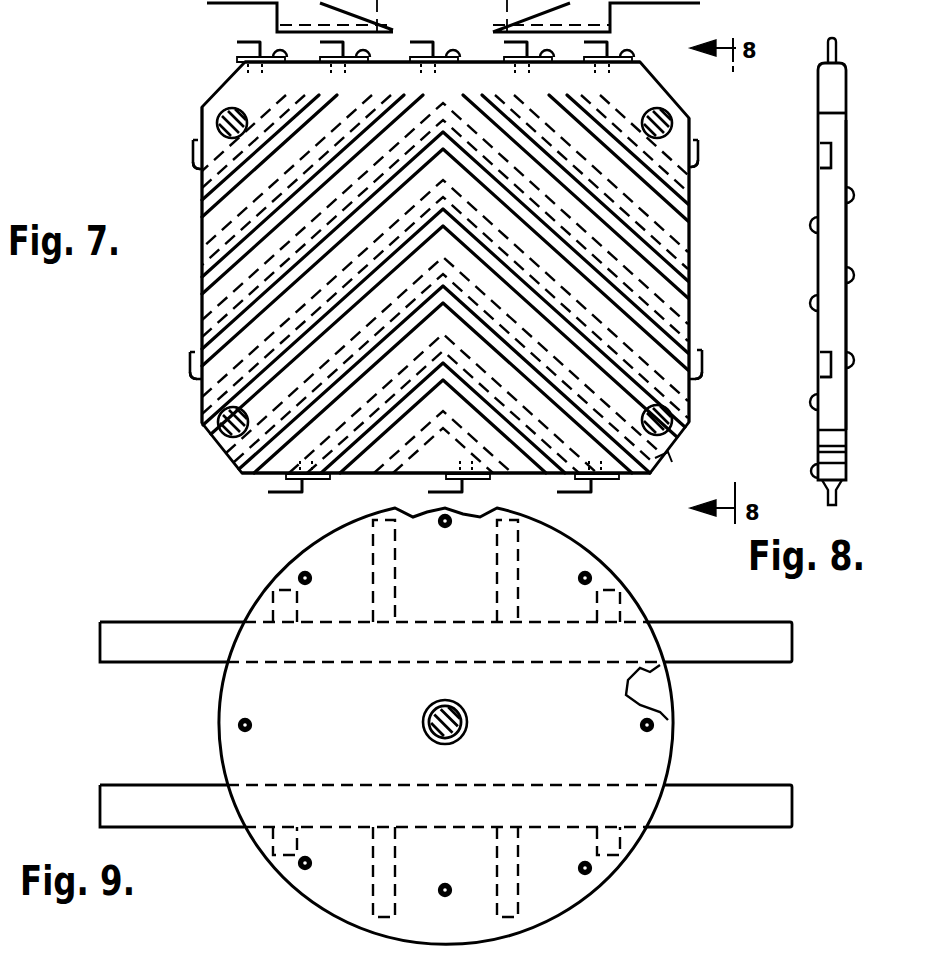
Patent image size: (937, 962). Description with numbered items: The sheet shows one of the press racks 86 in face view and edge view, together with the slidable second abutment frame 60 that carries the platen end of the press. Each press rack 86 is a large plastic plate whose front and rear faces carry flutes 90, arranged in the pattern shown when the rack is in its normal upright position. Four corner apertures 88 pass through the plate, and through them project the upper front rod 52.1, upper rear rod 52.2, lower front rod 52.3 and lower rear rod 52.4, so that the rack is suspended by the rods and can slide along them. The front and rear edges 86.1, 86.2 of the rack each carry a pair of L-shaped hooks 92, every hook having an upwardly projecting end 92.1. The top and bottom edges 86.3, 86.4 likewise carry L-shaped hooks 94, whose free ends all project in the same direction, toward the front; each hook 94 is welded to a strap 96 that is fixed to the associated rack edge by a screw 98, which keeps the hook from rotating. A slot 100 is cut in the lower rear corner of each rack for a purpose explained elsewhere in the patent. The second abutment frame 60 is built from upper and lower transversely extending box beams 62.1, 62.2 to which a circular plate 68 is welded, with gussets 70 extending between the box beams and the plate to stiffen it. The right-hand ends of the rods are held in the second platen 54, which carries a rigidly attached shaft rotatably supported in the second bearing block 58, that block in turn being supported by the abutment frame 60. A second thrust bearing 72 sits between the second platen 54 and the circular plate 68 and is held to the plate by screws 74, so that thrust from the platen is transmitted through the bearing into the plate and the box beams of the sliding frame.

In FIG. 7, the press rack 86 is at (690, 250).
In FIG. 8, the press rack 86 is at (818, 258).
In FIG. 7, the front edge 86.1 is at (201, 318).
In FIG. 7, the rear edge 86.2 is at (690, 322).
In FIG. 8, the rear edge 86.2 is at (818, 290).
In FIG. 7, the top edge 86.3 is at (270, 60).
In FIG. 8, the top edge 86.3 is at (820, 75).
In FIG. 7, the bottom edge 86.4 is at (265, 475).
In FIG. 8, the bottom edge 86.4 is at (818, 462).
In FIG. 7, the flutes 90 is at (205, 270).
In FIG. 8, the flutes 90 is at (848, 195).
In FIG. 7, the upper front rod 52.1 is at (220, 116).
In FIG. 7, the upper rear rod 52.2 is at (672, 123).
In FIG. 7, the lower front rod 52.3 is at (218, 428).
In FIG. 7, the lower rear rod 52.4 is at (672, 418).
In FIG. 7, the corner apertures 88 is at (217, 124).
In FIG. 7, the L-shaped hooks 92 is at (192, 168).
In FIG. 8, the L-shaped hooks 92 is at (820, 166).
In FIG. 7, the upwardly projecting end 92.1 is at (191, 150).
In FIG. 8, the upwardly projecting end 92.1 is at (820, 152).
In FIG. 7, the L-shaped hooks 94 is at (237, 42).
In FIG. 7, the strap 96 is at (240, 60).
In FIG. 7, the screw 98 is at (283, 66).
In FIG. 7, the slot 100 is at (672, 456).
In FIG. 9, the second abutment frame 60 is at (212, 594).
In FIG. 9, the second thrust bearing 72 is at (668, 752).
In FIG. 9, the upper box beam 62.1 is at (150, 662).
In FIG. 9, the lower box beam 62.2 is at (125, 785).
In FIG. 9, the gussets 70 is at (497, 580).
In FIG. 9, the screws 74 is at (300, 578).
In FIG. 9, the second bearing block 58 is at (422, 722).
In FIG. 9, the second platen 54 is at (468, 722).
In FIG. 9, the circular plate 68 is at (668, 695).